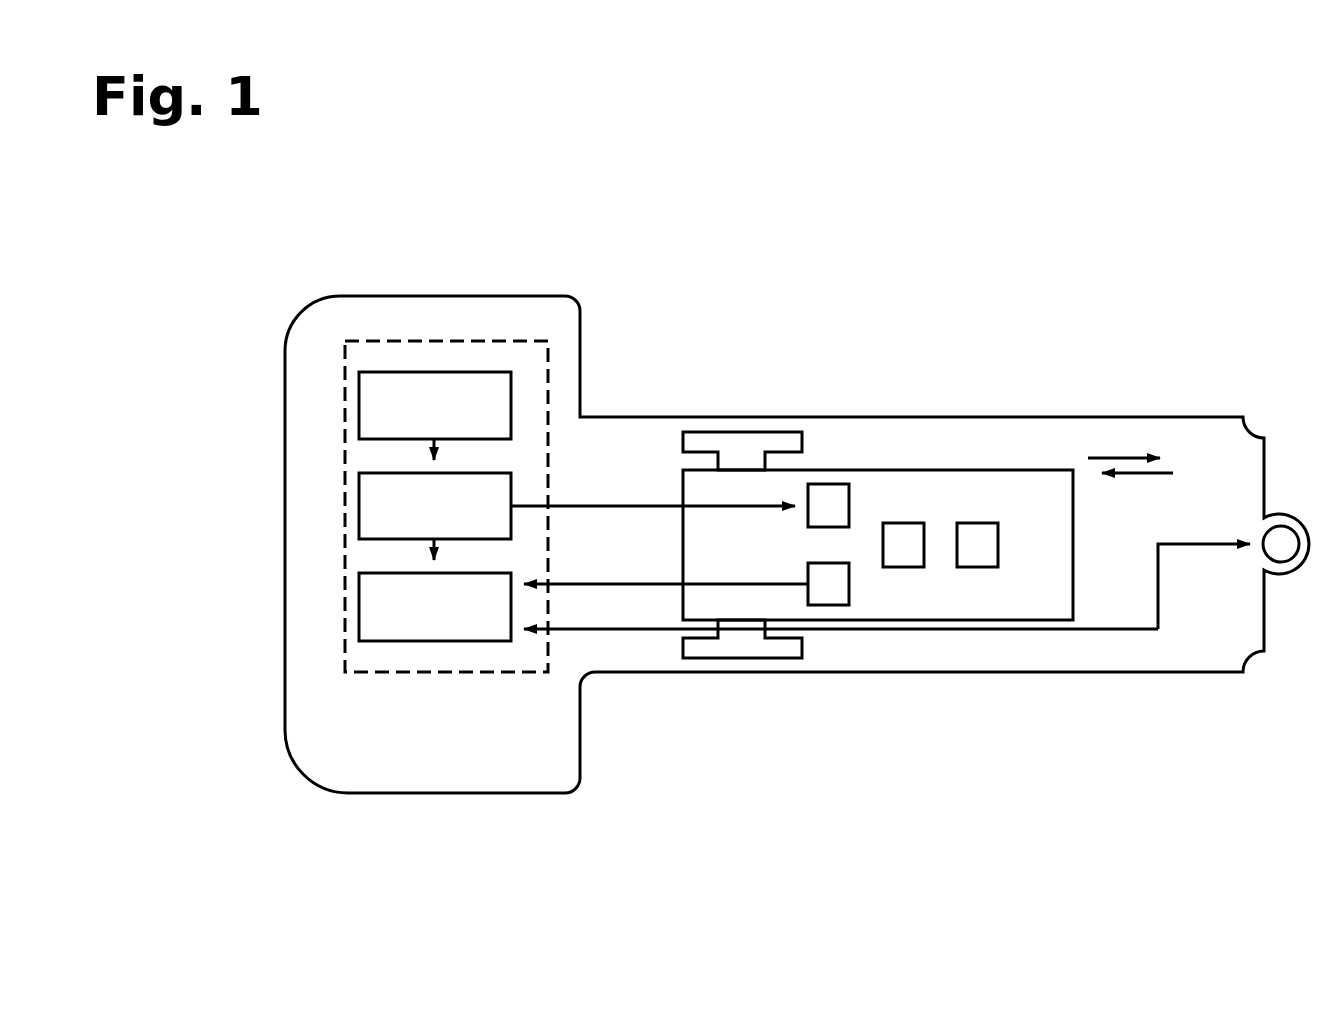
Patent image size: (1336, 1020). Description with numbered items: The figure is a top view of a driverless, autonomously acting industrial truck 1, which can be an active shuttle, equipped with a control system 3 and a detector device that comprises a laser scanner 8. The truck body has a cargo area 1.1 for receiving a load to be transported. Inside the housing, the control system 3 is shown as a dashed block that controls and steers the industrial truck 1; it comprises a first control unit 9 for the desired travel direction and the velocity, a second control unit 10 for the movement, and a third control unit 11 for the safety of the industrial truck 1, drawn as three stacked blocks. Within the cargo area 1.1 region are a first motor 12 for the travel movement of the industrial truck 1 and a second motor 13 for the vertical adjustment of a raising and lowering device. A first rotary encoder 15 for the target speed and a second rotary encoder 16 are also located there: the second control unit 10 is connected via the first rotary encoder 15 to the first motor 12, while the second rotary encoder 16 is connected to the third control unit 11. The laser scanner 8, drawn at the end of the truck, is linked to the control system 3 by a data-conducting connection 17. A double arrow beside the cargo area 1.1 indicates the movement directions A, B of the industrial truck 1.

The industrial truck 1 is at (182, 302).
The cargo area 1.1 is at (631, 470).
The control system 3 is at (446, 340).
The laser scanner 8 is at (1297, 523).
The first control unit 9 is at (375, 387).
The second control unit 10 is at (375, 489).
The third control unit 11 is at (375, 590).
The first motor 12 is at (903, 533).
The second motor 13 is at (978, 533).
The first rotary encoder 15 is at (832, 497).
The second rotary encoder 16 is at (832, 592).
The data-conducting connection 17 is at (640, 632).
The movement direction A is at (1118, 557).
The movement direction B is at (1137, 536).